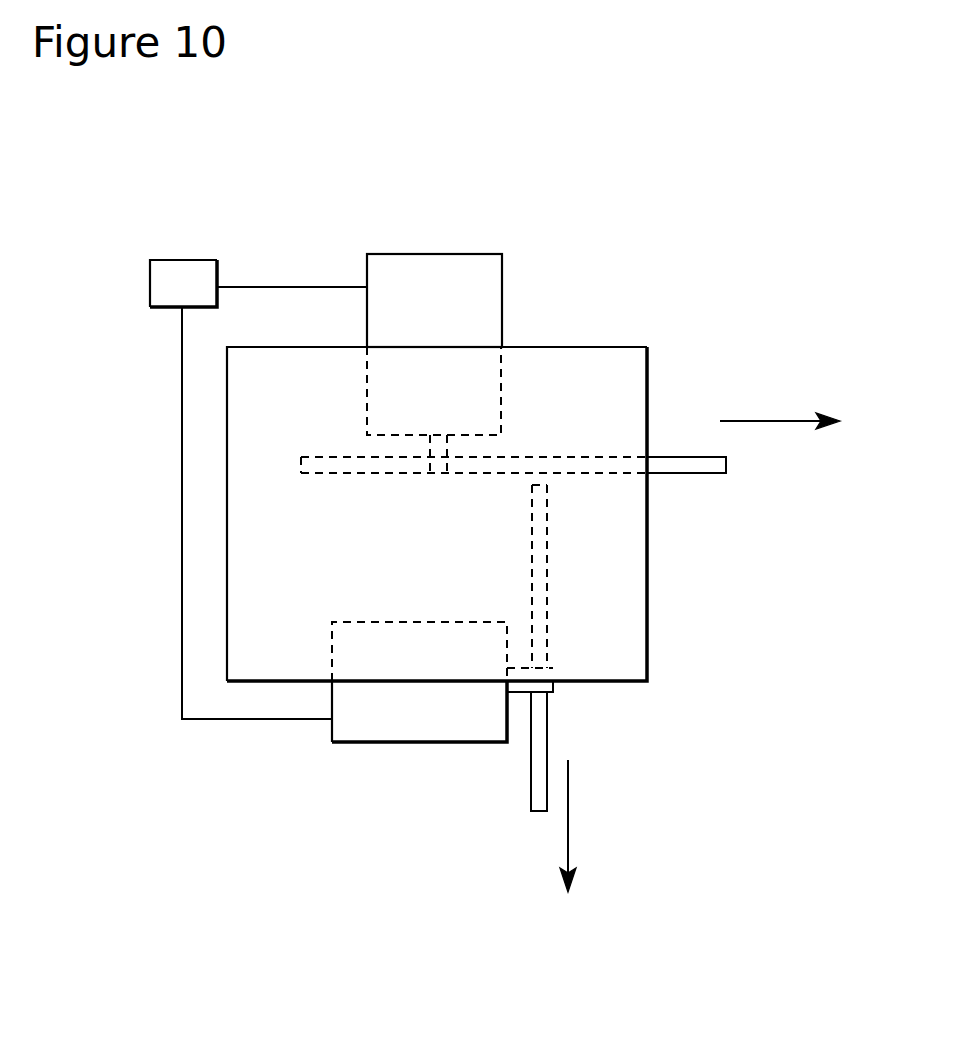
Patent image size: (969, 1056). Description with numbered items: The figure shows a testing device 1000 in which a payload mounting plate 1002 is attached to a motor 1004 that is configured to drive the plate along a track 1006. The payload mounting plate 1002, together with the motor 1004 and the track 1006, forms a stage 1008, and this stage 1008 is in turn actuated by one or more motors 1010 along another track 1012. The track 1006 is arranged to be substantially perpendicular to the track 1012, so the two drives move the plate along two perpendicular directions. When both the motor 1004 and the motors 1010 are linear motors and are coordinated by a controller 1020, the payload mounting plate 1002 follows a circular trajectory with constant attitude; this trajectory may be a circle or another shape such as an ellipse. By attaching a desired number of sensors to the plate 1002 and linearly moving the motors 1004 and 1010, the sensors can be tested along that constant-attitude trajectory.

The testing device 1000 is at (517, 132).
The payload mounting plate 1002 is at (617, 347).
The motor 1004 is at (363, 725).
The track 1006 is at (543, 733).
The stage 1008 is at (662, 592).
The motors 1010 is at (426, 254).
The track 1012 is at (686, 457).
The controller 1020 is at (177, 260).